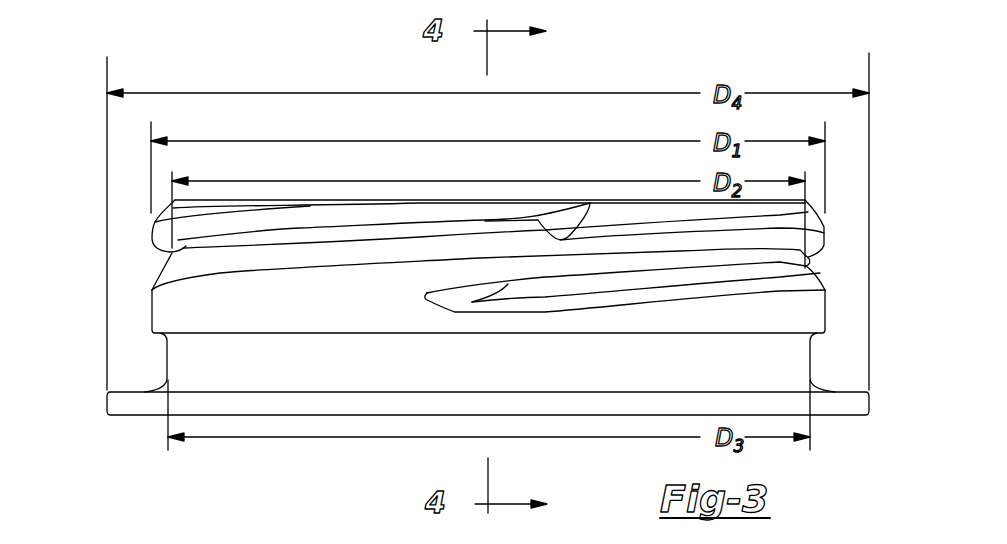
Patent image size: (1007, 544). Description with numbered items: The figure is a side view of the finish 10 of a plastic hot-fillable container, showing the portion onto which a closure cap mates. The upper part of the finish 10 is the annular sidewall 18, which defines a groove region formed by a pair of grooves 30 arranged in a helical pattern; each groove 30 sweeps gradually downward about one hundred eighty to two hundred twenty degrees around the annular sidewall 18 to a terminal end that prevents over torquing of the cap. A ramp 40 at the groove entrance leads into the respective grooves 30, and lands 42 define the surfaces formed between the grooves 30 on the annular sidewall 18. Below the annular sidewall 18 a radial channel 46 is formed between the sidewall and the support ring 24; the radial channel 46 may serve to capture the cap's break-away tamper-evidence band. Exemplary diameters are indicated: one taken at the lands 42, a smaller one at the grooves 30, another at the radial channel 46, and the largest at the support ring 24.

The finish 10 is at (78, 102).
The annular sidewall 18 is at (820, 317).
The support ring 24 is at (869, 402).
The grooves 30 is at (175, 252).
The ramp 40 is at (570, 235).
The lands 42 is at (155, 238).
The radial channel 46 is at (805, 363).